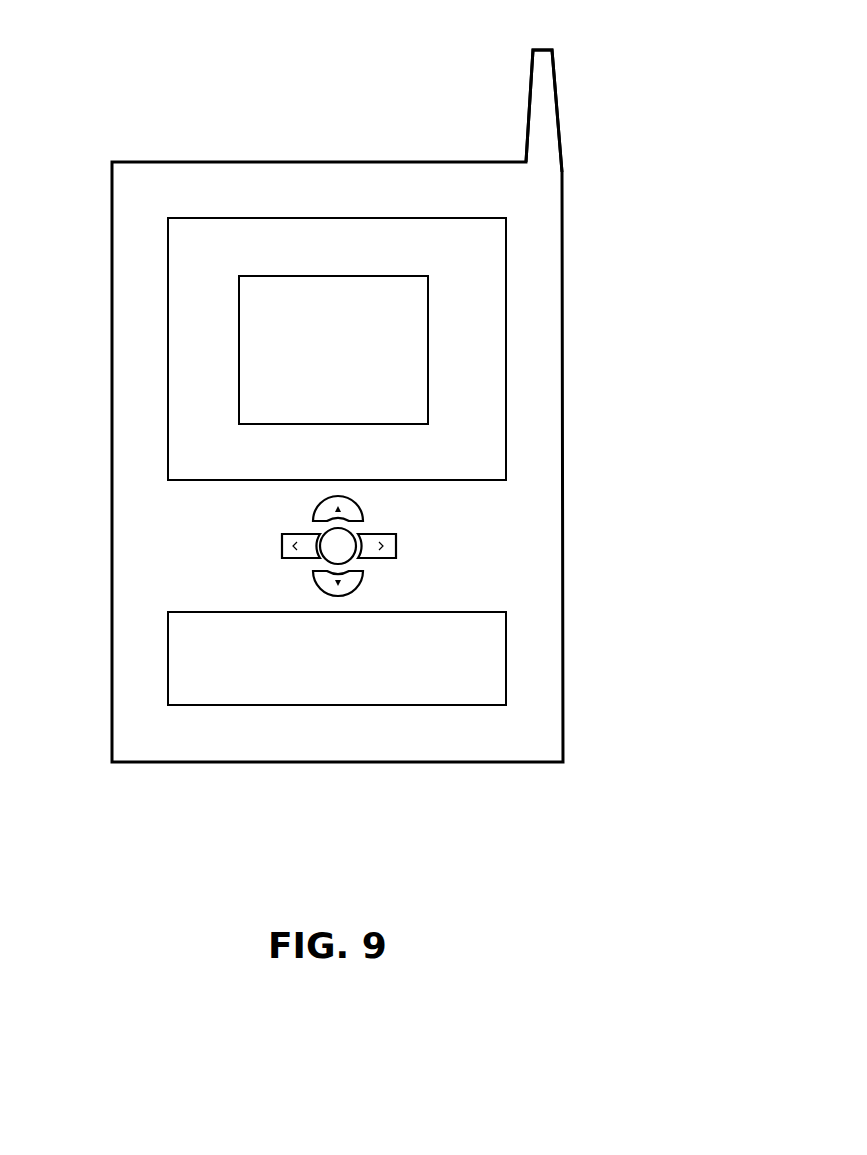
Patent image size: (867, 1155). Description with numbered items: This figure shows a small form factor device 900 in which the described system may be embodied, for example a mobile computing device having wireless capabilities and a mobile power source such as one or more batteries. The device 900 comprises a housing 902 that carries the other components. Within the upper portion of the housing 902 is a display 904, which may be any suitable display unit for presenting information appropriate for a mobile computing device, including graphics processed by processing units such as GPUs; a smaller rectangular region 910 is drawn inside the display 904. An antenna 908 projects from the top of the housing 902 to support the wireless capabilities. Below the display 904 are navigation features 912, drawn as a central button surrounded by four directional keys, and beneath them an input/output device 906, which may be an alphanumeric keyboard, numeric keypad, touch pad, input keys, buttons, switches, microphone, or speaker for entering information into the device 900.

The small form factor device 900 is at (131, 70).
The housing 902 is at (565, 462).
The display 904 is at (508, 237).
The input/output (I/O) device 906 is at (508, 650).
The antenna 908 is at (530, 98).
The display window 910 is at (430, 368).
The navigation features 912 is at (409, 538).